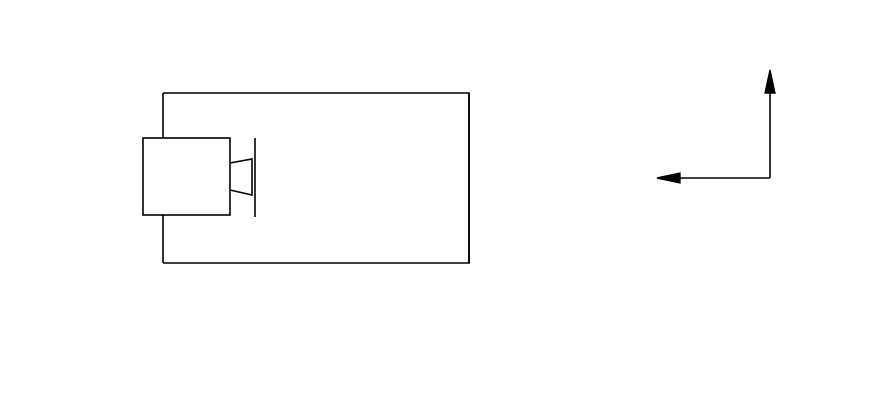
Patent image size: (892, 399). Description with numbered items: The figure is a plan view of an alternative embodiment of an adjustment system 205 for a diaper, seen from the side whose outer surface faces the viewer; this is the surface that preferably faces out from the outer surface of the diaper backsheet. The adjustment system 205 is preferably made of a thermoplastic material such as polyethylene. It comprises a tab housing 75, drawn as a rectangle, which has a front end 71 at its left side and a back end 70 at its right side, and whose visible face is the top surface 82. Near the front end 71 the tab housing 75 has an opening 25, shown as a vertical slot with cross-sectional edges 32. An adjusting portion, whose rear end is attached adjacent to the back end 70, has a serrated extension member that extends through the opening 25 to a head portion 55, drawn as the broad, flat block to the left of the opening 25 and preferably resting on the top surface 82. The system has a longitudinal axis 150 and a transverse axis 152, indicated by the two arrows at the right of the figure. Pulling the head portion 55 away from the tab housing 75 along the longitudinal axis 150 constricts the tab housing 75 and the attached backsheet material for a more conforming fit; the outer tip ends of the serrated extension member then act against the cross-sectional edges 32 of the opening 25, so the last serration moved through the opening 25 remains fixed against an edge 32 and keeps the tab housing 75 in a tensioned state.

The adjustment system 205 is at (441, 62).
The back end 70 is at (470, 217).
The front end 71 is at (162, 237).
The tab housing 75 is at (450, 140).
The top surface 82 is at (362, 190).
The head portion 55 is at (150, 177).
The opening 25 is at (258, 146).
The cross-sectional edge 32 is at (242, 177).
The longitudinal axis 150 is at (712, 178).
The transverse axis 152 is at (770, 122).